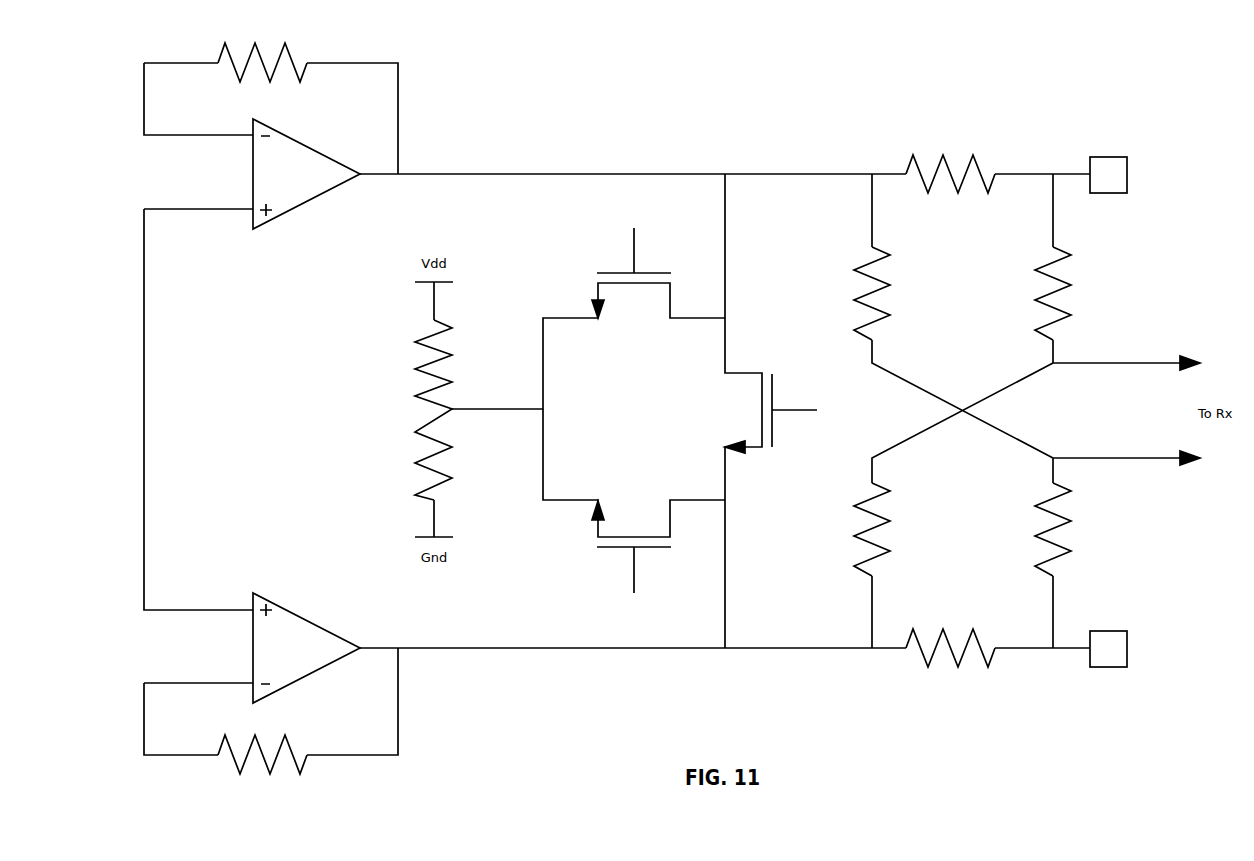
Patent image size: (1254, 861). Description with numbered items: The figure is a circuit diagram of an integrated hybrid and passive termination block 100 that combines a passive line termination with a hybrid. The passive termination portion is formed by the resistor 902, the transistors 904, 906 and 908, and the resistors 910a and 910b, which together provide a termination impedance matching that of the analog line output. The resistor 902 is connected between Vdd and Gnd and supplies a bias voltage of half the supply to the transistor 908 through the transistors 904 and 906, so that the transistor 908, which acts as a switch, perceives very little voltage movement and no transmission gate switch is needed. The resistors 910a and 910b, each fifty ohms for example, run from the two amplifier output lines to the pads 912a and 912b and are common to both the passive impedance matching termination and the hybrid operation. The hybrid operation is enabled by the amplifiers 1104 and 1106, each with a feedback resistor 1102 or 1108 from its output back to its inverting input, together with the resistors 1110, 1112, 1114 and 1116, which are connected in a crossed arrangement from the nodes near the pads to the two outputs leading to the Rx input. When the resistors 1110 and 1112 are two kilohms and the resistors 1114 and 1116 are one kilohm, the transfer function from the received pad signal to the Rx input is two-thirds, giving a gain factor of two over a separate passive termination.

The sensing circuit 100 is at (655, 45).
The resistor 902 is at (452, 332).
The transistor 904 is at (634, 252).
The transistor 906 is at (634, 580).
The transistor 908 is at (772, 386).
The resistor 910a is at (990, 172).
The resistor 910b is at (990, 646).
The pad 912a is at (1127, 179).
The pad 912b is at (1127, 653).
The resistor 1102 is at (298, 63).
The amplifier 1104 is at (253, 183).
The amplifier 1106 is at (253, 653).
The resistor 1108 is at (298, 755).
The resistor 1110 is at (890, 288).
The resistor 1112 is at (890, 523).
The resistor 1114 is at (1071, 288).
The resistor 1116 is at (1071, 523).